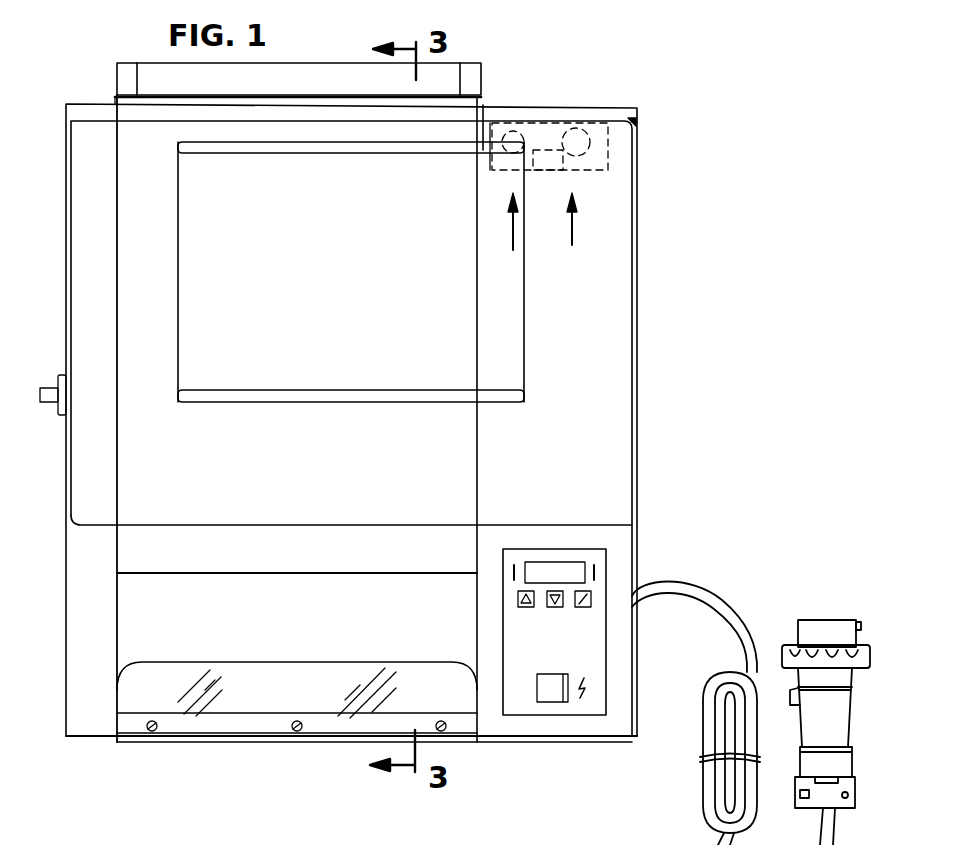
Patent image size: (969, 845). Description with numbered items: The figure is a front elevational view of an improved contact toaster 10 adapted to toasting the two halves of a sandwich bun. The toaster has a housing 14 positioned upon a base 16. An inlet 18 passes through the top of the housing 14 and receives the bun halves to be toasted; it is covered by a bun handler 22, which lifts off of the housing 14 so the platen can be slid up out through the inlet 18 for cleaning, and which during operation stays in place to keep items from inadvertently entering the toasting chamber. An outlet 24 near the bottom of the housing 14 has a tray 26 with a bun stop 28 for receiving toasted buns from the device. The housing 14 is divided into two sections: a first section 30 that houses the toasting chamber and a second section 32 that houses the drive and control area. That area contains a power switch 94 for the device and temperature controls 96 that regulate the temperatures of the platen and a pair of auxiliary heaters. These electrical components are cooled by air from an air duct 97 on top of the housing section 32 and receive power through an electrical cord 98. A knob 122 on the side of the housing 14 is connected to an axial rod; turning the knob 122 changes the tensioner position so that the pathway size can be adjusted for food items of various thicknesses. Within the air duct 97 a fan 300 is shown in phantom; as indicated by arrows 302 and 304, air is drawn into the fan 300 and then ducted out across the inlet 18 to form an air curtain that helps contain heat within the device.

The contact toaster 10 is at (676, 112).
The housing 14 is at (664, 302).
The base 16 is at (495, 742).
The inlet 18 is at (167, 99).
The bun handler 22 is at (452, 62).
The outlet 24 is at (117, 626).
The tray 26 is at (128, 742).
The bun stop 28 is at (223, 698).
The first section 30 is at (145, 547).
The second section 32 is at (595, 203).
The power switch 94 is at (570, 700).
The temperature controls 96 is at (590, 600).
The air duct 97 is at (634, 120).
The electrical cord 98 is at (722, 597).
The knob 122 is at (42, 403).
The fan 300 is at (527, 140).
The arrow 302 is at (513, 225).
The arrow 304 is at (575, 218).